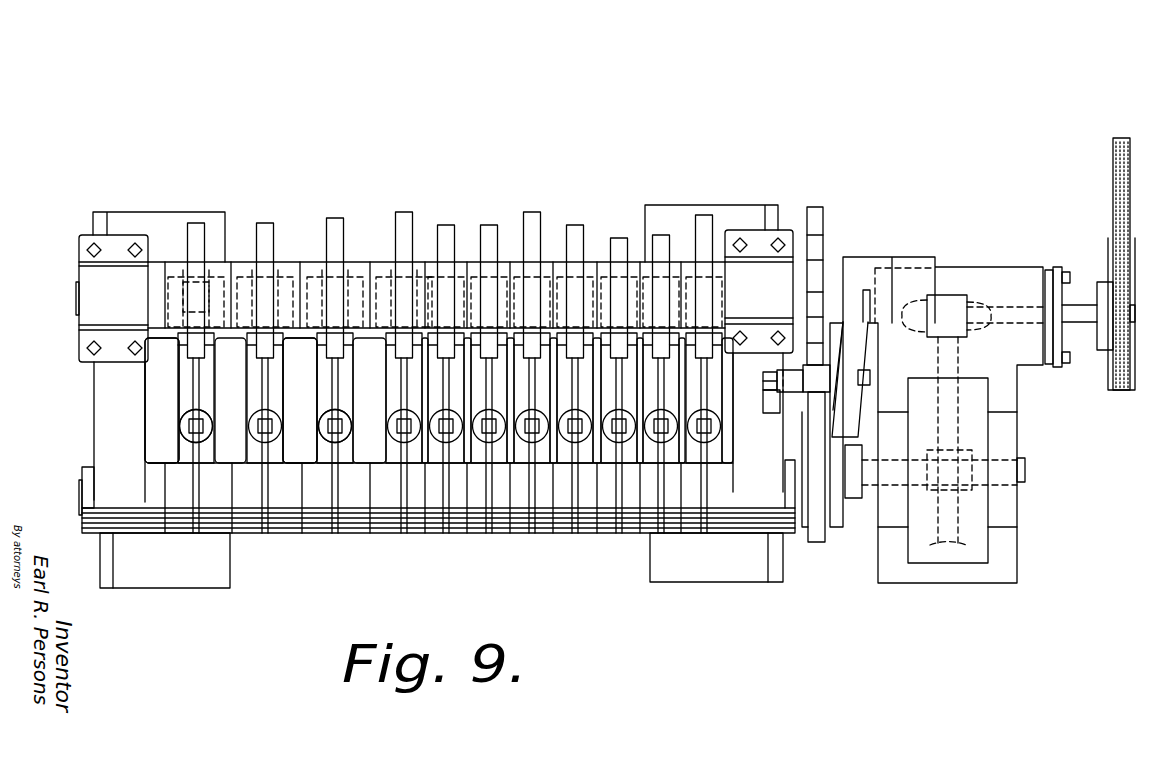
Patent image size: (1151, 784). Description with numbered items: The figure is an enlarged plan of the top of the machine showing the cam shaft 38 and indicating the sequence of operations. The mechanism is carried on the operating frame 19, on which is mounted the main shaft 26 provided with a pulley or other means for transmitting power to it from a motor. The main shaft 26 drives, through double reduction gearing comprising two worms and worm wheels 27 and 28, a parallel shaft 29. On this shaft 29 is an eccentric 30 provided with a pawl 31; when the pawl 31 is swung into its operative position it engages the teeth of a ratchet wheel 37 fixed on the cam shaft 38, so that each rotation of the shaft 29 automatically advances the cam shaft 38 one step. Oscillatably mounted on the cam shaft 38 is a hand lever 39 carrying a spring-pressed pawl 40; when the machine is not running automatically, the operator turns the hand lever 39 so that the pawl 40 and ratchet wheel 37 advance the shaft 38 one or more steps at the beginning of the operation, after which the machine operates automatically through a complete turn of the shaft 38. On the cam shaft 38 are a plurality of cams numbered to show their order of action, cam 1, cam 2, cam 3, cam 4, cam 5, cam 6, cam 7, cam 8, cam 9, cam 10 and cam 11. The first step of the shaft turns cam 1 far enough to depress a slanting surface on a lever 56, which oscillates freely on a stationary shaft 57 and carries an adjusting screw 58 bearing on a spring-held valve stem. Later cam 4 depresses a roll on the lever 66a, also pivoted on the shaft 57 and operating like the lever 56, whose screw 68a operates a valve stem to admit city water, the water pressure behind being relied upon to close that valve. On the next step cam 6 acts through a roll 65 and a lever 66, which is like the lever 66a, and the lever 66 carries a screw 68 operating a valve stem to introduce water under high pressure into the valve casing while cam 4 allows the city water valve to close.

The cam No. 1 is at (693, 311).
The cam No. 2 is at (447, 270).
The cam No. 3 is at (584, 266).
The cam No. 4 is at (381, 266).
The cam No. 5 is at (729, 311).
The cam No. 6 is at (231, 287).
The cam No. 7 is at (605, 308).
The cam No. 8 is at (653, 308).
The cam No. 9 is at (300, 285).
The cam No. 10 is at (537, 276).
The cam No. 11 is at (501, 266).
The operating frame 19 is at (177, 578).
The main shaft 26 is at (1070, 314).
The worm and worm wheel 27 is at (960, 300).
The worm and worm wheel 28 is at (940, 528).
The parallel shaft 29 is at (873, 492).
The eccentric 30 is at (838, 526).
The pawl 31 is at (817, 540).
The ratchet wheel 37 is at (821, 230).
The cam shaft 38 is at (76, 299).
The hand lever 39 is at (852, 346).
The spring-pressed pawl 40 is at (810, 380).
The lever 56 is at (673, 380).
The stationary shaft 57 is at (80, 502).
The adjusting screw 58 is at (675, 405).
The roll 65 is at (184, 292).
The lever 66 is at (183, 402).
The lever 66a is at (320, 390).
The screw 68 is at (191, 430).
The screw 68a is at (331, 429).